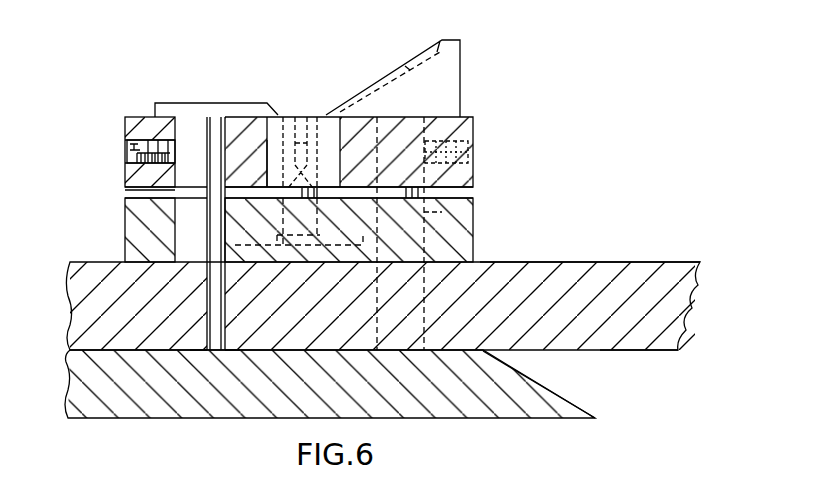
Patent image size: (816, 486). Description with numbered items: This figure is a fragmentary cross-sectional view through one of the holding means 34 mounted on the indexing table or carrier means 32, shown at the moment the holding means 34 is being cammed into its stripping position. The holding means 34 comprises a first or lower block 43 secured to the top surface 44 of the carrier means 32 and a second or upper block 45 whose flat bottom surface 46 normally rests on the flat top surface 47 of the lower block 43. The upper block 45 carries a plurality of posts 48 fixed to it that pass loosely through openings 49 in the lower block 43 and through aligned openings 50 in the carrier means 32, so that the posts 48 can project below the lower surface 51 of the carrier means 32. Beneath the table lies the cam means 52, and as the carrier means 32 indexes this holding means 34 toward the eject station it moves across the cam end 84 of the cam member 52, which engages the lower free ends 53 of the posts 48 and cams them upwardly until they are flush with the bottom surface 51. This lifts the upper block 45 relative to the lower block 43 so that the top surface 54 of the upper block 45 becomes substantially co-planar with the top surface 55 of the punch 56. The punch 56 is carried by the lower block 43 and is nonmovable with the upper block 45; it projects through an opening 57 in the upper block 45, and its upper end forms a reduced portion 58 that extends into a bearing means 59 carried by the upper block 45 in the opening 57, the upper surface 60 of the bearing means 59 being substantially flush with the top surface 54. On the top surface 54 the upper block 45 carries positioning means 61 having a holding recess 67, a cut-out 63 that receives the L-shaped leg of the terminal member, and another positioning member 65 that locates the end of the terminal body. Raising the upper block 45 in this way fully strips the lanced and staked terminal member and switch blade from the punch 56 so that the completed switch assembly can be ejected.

The table or carrier means 32 is at (680, 295).
The holding means 34 is at (503, 112).
The first block or lower block 43 is at (474, 226).
The top surface of carrier means 44 is at (640, 262).
The second block or upper block 45 is at (463, 172).
The flat bottom surface of upper block 46 is at (140, 192).
The flat top surface of lower block 47 is at (163, 193).
The posts 48 is at (182, 132).
The openings in lower block 49 is at (175, 247).
The aligned openings in carrier means 50 is at (175, 302).
The lower surface of carrier means 51 is at (632, 352).
The cam means or cam member 52 is at (217, 407).
The lower free ends of posts 53 is at (197, 350).
The top surface of upper block 54 is at (462, 117).
The top surface or upper end of punch 55 is at (302, 115).
The punch 56 is at (283, 215).
The opening in upper block 57 is at (317, 160).
The reduced portion of punch 58 is at (287, 140).
The bearing means 59 is at (268, 115).
The upper surface of bearing means 60 is at (287, 115).
The positioning means 61 is at (458, 55).
The cut-out in upper block 63 is at (340, 135).
The positioning member 65 is at (182, 103).
The holding recess 67 is at (408, 67).
The cam end of cam member 84 is at (533, 383).